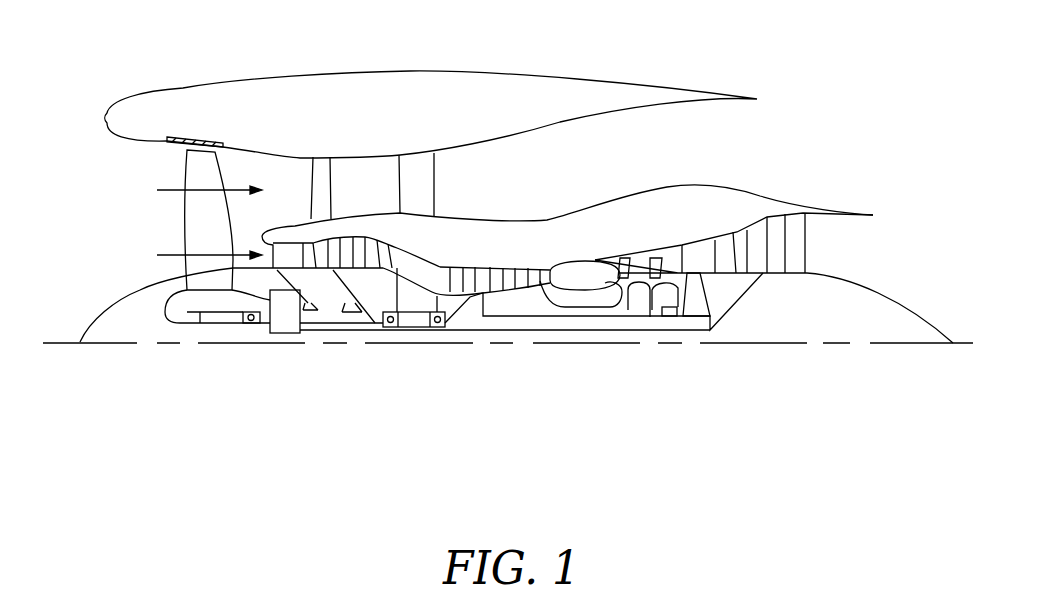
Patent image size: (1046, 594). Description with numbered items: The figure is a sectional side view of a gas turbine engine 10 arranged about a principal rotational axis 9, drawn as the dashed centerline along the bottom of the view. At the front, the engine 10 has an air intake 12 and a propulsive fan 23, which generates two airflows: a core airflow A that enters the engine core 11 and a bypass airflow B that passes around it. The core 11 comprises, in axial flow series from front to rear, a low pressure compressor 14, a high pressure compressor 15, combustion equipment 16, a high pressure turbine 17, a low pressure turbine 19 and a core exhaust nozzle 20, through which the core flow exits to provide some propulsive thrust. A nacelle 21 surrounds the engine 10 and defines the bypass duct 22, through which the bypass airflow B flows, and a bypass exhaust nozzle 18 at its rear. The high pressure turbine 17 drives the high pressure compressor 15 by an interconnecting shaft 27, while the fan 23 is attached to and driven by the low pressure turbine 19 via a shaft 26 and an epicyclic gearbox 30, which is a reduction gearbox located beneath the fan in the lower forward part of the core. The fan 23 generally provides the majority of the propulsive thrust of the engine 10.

The principal rotational axis 9 is at (757, 345).
The gas turbine engine 10 is at (178, 87).
The engine core 11 is at (550, 228).
The air intake 12 is at (122, 167).
The low pressure compressor 14 is at (355, 247).
The high pressure compressor 15 is at (502, 280).
The combustion equipment 16 is at (578, 280).
The high pressure turbine 17 is at (641, 268).
The bypass exhaust nozzle 18 is at (765, 138).
The low pressure turbine 19 is at (777, 232).
The core exhaust nozzle 20 is at (850, 244).
The nacelle 21 is at (414, 88).
The bypass duct 22 is at (705, 153).
The propulsive fan 23 is at (186, 220).
The shaft 26 is at (496, 330).
The interconnecting shaft 27 is at (538, 300).
The epicyclic gearbox 30 is at (283, 323).